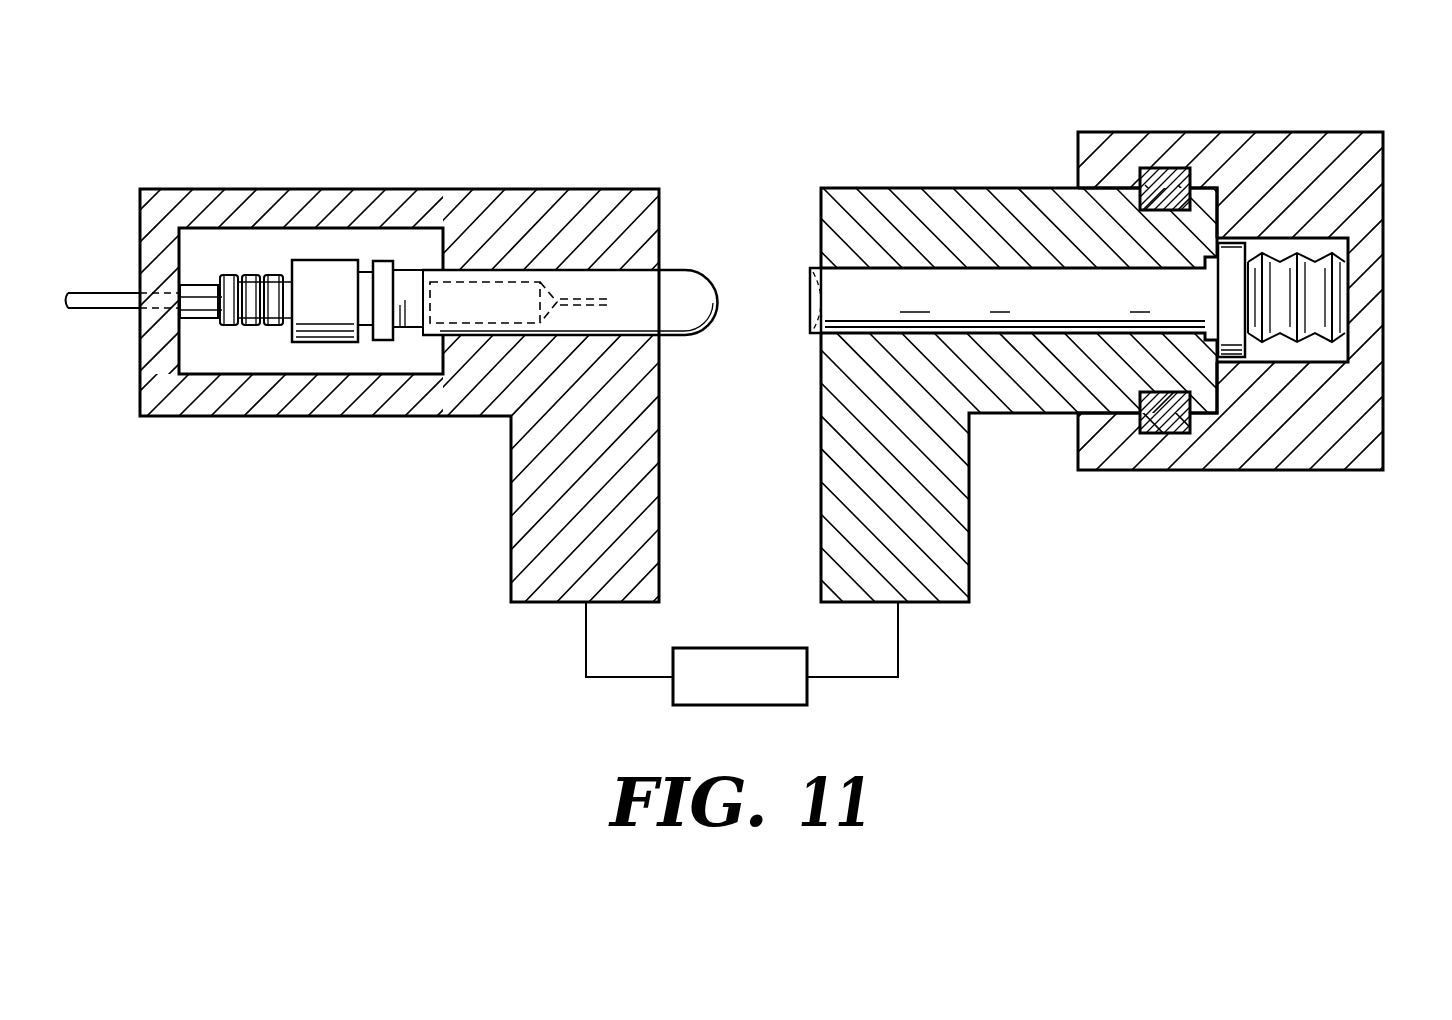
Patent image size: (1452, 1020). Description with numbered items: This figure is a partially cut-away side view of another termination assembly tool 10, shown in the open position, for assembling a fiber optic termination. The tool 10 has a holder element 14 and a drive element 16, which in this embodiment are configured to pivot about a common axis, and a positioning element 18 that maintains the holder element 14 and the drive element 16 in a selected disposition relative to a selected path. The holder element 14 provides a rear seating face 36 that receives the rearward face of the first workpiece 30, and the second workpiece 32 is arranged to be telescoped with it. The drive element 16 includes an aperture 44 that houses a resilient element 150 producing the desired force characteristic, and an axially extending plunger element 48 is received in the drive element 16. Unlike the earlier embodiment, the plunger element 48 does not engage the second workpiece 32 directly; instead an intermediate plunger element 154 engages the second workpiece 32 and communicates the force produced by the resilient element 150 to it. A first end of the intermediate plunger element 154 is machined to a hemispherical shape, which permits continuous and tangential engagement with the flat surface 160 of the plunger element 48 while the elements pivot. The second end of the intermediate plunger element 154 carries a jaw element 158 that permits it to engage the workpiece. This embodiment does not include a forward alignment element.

The tool 10 is at (1240, 116).
The holder element 14 is at (426, 163).
The drive element 16 is at (1047, 178).
The positioning element 18 is at (748, 687).
The first workpiece 30 is at (260, 322).
The second workpiece 32 is at (198, 285).
The rear seating face 36 is at (188, 355).
The aperture 44 is at (1323, 355).
The plunger element 48 is at (820, 268).
The resilient element 150 is at (1340, 273).
The intermediate plunger element 154 is at (596, 281).
The jaw element 158 is at (430, 314).
The flat surface 160 is at (811, 306).